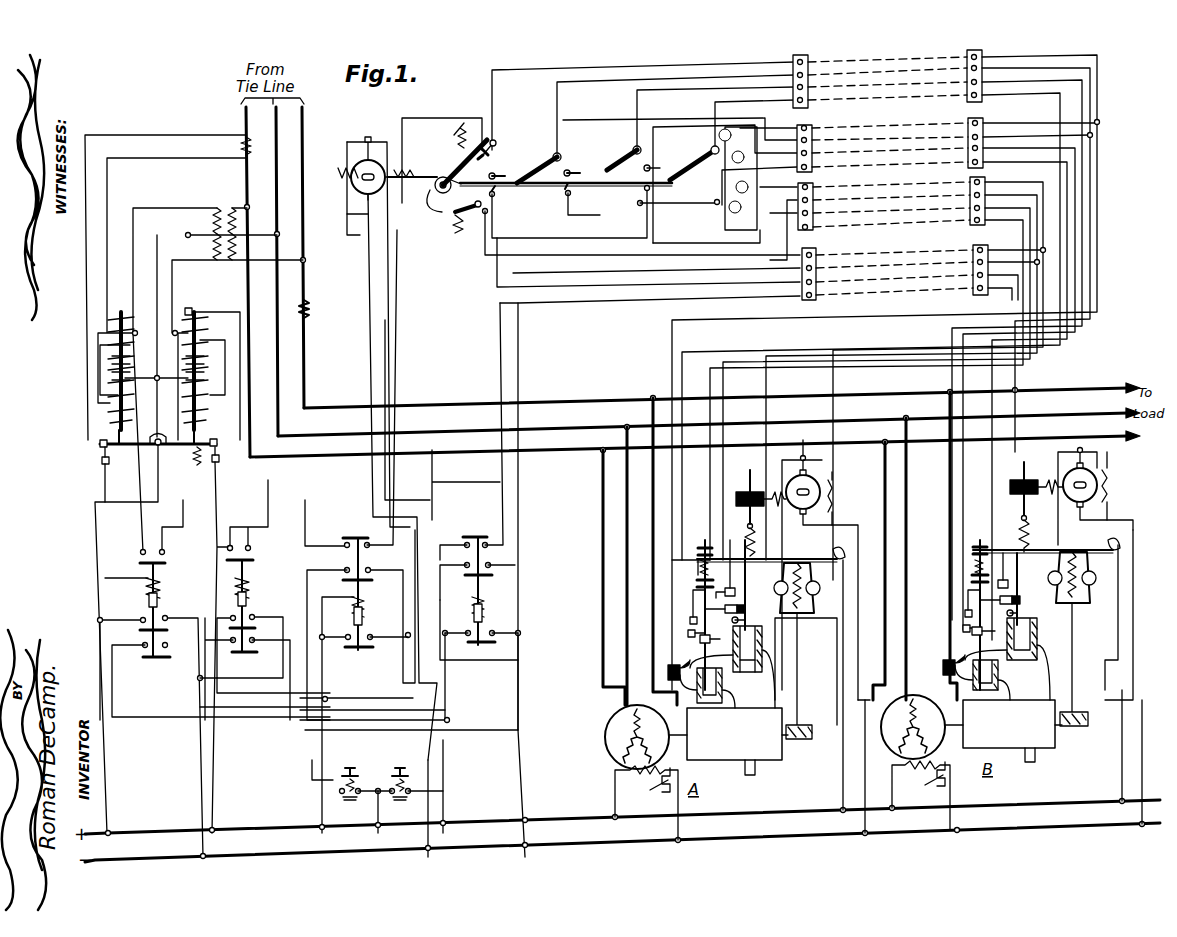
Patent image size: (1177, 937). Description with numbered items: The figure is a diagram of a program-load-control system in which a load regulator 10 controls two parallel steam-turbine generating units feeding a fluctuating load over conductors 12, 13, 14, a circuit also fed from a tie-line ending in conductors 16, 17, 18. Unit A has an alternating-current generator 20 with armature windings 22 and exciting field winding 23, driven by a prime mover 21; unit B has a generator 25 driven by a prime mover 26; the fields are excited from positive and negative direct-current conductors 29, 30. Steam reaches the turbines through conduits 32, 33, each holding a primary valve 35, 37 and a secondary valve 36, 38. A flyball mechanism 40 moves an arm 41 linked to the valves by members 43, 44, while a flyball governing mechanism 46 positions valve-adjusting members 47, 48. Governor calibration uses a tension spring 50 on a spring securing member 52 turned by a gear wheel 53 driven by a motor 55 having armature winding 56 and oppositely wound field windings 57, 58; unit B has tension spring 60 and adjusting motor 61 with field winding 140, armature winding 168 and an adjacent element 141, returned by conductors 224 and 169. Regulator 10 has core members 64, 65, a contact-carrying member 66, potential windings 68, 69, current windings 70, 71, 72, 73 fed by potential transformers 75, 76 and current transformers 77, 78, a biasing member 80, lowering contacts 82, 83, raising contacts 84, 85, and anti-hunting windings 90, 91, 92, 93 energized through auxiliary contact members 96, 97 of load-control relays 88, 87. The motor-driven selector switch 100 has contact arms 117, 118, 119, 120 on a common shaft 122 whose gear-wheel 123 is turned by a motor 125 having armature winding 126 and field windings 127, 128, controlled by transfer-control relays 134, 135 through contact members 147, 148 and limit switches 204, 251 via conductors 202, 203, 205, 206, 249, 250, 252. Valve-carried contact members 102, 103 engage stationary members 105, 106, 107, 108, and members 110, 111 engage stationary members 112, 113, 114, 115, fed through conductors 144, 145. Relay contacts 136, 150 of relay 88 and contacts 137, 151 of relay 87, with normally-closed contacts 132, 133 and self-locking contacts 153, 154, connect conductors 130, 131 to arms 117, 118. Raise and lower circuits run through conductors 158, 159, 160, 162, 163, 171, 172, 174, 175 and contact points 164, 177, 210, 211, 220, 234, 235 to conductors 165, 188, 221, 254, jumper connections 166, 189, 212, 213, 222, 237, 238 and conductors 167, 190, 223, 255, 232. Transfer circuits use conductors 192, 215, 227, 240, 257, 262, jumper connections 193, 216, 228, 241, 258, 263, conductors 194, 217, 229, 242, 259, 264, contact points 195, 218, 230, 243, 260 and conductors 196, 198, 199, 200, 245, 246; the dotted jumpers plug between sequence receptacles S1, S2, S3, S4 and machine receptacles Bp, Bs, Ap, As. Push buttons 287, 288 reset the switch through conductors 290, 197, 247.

The load regulator 10 is at (158, 424).
The conductor 12 is at (880, 394).
The conductor 13 is at (878, 417).
The conductor 14 is at (874, 440).
The tie-line conductor 16 is at (244, 174).
The tie-line conductor 17 is at (275, 190).
The tie-line conductor 18 is at (301, 190).
The alternating-current generator 20 is at (629, 743).
The prime mover 21 is at (728, 741).
The armature windings 22 is at (630, 708).
The exciting field winding 23 is at (647, 792).
The generator 25 is at (913, 580).
The prime mover 26 is at (1003, 731).
The positive-control conductor 29 is at (142, 826).
The negative-control conductor 30 is at (160, 856).
The conduit 32 is at (664, 671).
The conduit 33 is at (955, 658).
The primary valve 35 is at (760, 649).
The secondary valve 36 is at (730, 687).
The primary valve 37 is at (1030, 631).
The secondary valve 38 is at (1005, 679).
The flyball mechanism 40 is at (814, 602).
The arm 41 is at (832, 556).
The member 43 is at (740, 610).
The member 44 is at (687, 588).
The flyball governing mechanism 46 is at (1084, 592).
The primary valve-adjusting member 47 is at (1018, 597).
The secondary valve-adjusting member 48 is at (967, 585).
The tension spring 50 is at (752, 536).
The spring securing member 52 is at (748, 509).
The gear wheel 53 is at (748, 498).
The motor 55 is at (820, 580).
The armature winding 56 is at (816, 458).
The field winding 57 is at (830, 494).
The field winding 58 is at (774, 506).
The tension spring 60 is at (1028, 527).
The adjusting motor 61 is at (1095, 497).
The movable magnetic core member 64 is at (121, 310).
The movable magnetic core member 65 is at (197, 311).
The contact-carrying member 66 is at (160, 442).
The potential winding 68 is at (120, 366).
The potential winding 69 is at (184, 366).
The current winding 70 is at (108, 325).
The current winding 71 is at (110, 410).
The current winding 72 is at (198, 326).
The current winding 73 is at (200, 410).
The potential transformer 75 is at (208, 221).
The potential transformer 76 is at (215, 249).
The current transformer 77 is at (240, 149).
The current transformer 78 is at (310, 321).
The biasing member 80 is at (195, 472).
The contact element 82 is at (198, 437).
The contact element 83 is at (215, 458).
The contact member 84 is at (98, 445).
The contact member 85 is at (100, 461).
The load-control relay 87 is at (265, 580).
The load-control relay 88 is at (132, 592).
The anti-hunting winding 90 is at (108, 340).
The anti-hunting winding 91 is at (110, 384).
The anti-hunting winding 92 is at (200, 345).
The anti-hunting winding 93 is at (200, 386).
The auxiliary contact member 96 is at (163, 561).
The auxiliary contact member 97 is at (250, 549).
The selector switch 100 is at (692, 170).
The contact member 102 is at (742, 603).
The contact member 103 is at (688, 627).
The stationary contact member 105 is at (720, 619).
The stationary contact member 106 is at (747, 569).
The stationary contact member 107 is at (700, 641).
The stationary contact member 108 is at (692, 602).
The contact member 110 is at (1010, 599).
The contact member 111 is at (977, 630).
The stationary member 112 is at (1008, 610).
The stationary member 113 is at (968, 625).
The stationary member 114 is at (1002, 591).
The stationary member 115 is at (970, 605).
The contact arm 117 is at (452, 157).
The contact arm 118 is at (538, 168).
The contact arm 119 is at (626, 165).
The contact arm 120 is at (714, 148).
The common shaft 122 is at (640, 189).
The gear-wheel 123 is at (440, 192).
The motor 125 is at (365, 141).
The armature winding 126 is at (360, 199).
The field winding 127 is at (340, 168).
The field winding 128 is at (390, 188).
The conductor 130 is at (382, 344).
The conductor 131 is at (500, 310).
The contact member 132 is at (355, 527).
The contact member 133 is at (482, 525).
The transfer-control relay 134 is at (376, 607).
The transfer-control relay 135 is at (495, 600).
The contact member 136 is at (140, 630).
The contact member 137 is at (234, 628).
The field winding 140 is at (1105, 473).
The solenoid 141 is at (1038, 475).
The conductor 144 is at (848, 670).
The conductor 145 is at (1118, 662).
The contact member 147 is at (346, 581).
The contact member 148 is at (468, 577).
The contact member 150 is at (150, 658).
The contact member 151 is at (236, 652).
The self-locking contact 153 is at (359, 650).
The self-locking contact 154 is at (474, 652).
The conductor 158 is at (98, 776).
The conductor 159 is at (130, 515).
The conductor 160 is at (201, 768).
The conductor 162 is at (122, 615).
The conductor 163 is at (181, 616).
The stationary contact point 164 is at (492, 142).
The conductor 165 is at (492, 109).
The jumper connection 166 is at (886, 61).
The conductor 167 is at (1051, 61).
The armature winding 168 is at (1067, 497).
The conductor 169 is at (1133, 577).
The conductor 171 is at (217, 522).
The conductor 172 is at (252, 599).
The conductor 174 is at (212, 760).
The conductor 175 is at (314, 694).
The stationary contact point 177 is at (550, 152).
The conductor 188 is at (563, 115).
The jumper connection 189 is at (887, 64).
The conductor 190 is at (1095, 68).
The conductor 192 is at (1092, 88).
The jumper connection 193 is at (896, 85).
The conductor 194 is at (698, 100).
The stationary contact point 195 is at (636, 150).
The conductor 196 is at (115, 692).
The conductor 197 is at (314, 745).
The conductor 198 is at (196, 680).
The conductor 199 is at (487, 692).
The conductor 200 is at (520, 752).
The conductor 202 is at (310, 788).
The conductor 203 is at (392, 571).
The limit switch 204 is at (453, 214).
The conductor 205 is at (357, 220).
The conductor 206 is at (380, 748).
The contact point 210 is at (497, 175).
The contact point 211 is at (569, 174).
The jumper connection 212 is at (886, 129).
The jumper connection 213 is at (902, 129).
The conductor 215 is at (1085, 157).
The jumper connection 216 is at (886, 158).
The conductor 217 is at (656, 153).
The stationary contact point 218 is at (647, 168).
The contact point 220 is at (495, 195).
The conductor 221 is at (497, 238).
The jumper connection 222 is at (886, 191).
The conductor 223 is at (1015, 185).
The conductor 224 is at (847, 582).
The conductor 227 is at (1025, 233).
The jumper connection 228 is at (896, 199).
The conductor 229 is at (736, 252).
The contact point 230 is at (675, 196).
The conductor 232 is at (1025, 212).
The contact point 234 is at (488, 212).
The contact point 235 is at (568, 205).
The jumper connection 237 is at (926, 256).
The jumper connection 238 is at (930, 267).
The conductor 240 is at (971, 297).
The jumper connection 241 is at (905, 294).
The conductor 242 is at (763, 297).
The contact point 243 is at (688, 210).
The conductor 245 is at (265, 734).
The conductor 246 is at (455, 683).
The conductor 247 is at (428, 765).
The conductor 249 is at (437, 806).
The conductor 250 is at (435, 488).
The limit switch 251 is at (449, 130).
The conductor 252 is at (402, 118).
The conductor 254 is at (763, 269).
The conductor 255 is at (1021, 265).
The conductor 257 is at (1013, 229).
The jumper connection 258 is at (886, 226).
The conductor 259 is at (738, 179).
The contact point 260 is at (714, 196).
The conductor 262 is at (1020, 166).
The jumper connection 263 is at (700, 184).
The conductor 264 is at (788, 181).
The push button 287 is at (342, 768).
The push button 288 is at (405, 760).
The conductor 290 is at (375, 805).
The sequence receptacle S1 is at (795, 58).
The sequence receptacle S2 is at (800, 128).
The sequence receptacle S3 is at (801, 190).
The sequence receptacle S4 is at (801, 255).
The machine receptacle Bp is at (963, 58).
The machine receptacle Bs is at (968, 124).
The machine receptacle Ap is at (970, 189).
The machine receptacle As is at (974, 250).